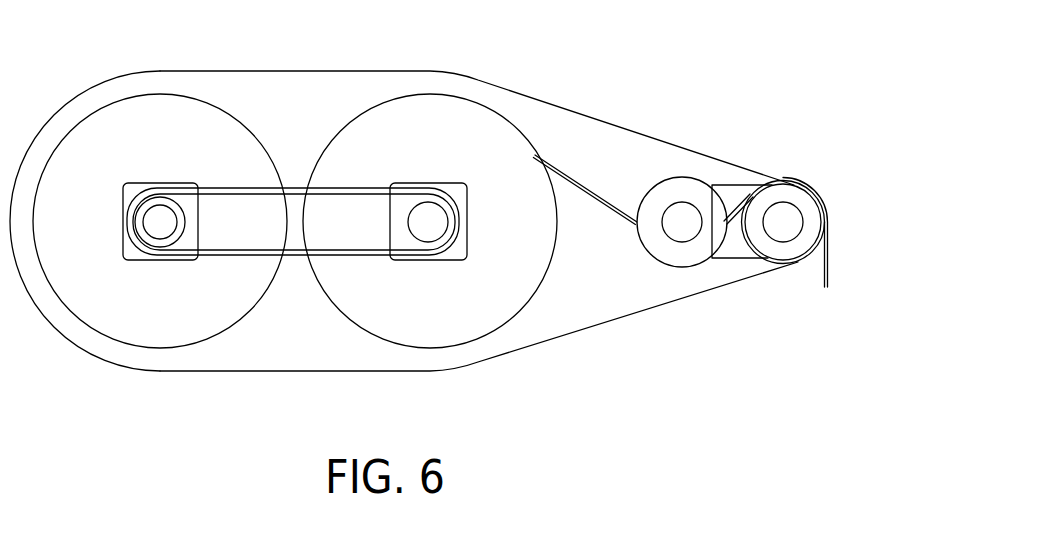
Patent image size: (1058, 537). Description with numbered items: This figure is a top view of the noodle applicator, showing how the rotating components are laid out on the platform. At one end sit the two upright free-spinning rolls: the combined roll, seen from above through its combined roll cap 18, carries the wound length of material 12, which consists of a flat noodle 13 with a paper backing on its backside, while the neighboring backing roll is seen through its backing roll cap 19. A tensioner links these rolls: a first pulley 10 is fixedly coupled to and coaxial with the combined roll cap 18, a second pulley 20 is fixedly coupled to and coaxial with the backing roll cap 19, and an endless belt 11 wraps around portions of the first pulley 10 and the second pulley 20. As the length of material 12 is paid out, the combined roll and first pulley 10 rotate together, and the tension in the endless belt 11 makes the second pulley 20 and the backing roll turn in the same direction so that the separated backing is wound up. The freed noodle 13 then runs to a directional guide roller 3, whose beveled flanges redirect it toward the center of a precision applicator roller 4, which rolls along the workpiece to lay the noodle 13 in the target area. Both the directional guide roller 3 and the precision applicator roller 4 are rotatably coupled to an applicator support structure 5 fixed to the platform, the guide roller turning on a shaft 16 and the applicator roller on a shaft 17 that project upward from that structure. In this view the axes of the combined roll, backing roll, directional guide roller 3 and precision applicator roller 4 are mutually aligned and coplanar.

The directional guide roller 3 is at (721, 238).
The precision applicator roller 4 is at (798, 262).
The applicator support structure 5 is at (733, 185).
The first pulley 10 is at (160, 183).
The endless belt 11 is at (290, 232).
The length of material 12 is at (297, 210).
The noodle 13 is at (587, 186).
The shaft 16 is at (675, 203).
The shaft 17 is at (764, 226).
The combined roll cap 18 is at (88, 327).
The backing roll cap 19 is at (487, 108).
The second pulley 20 is at (400, 250).